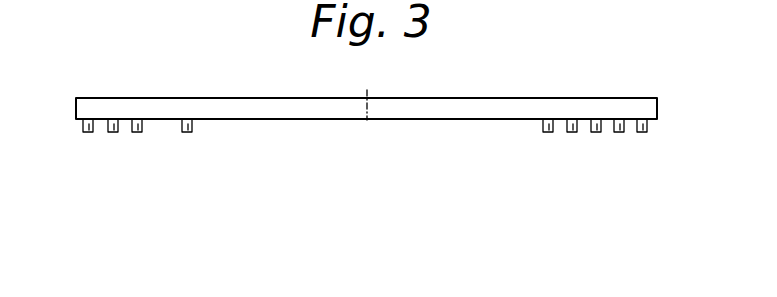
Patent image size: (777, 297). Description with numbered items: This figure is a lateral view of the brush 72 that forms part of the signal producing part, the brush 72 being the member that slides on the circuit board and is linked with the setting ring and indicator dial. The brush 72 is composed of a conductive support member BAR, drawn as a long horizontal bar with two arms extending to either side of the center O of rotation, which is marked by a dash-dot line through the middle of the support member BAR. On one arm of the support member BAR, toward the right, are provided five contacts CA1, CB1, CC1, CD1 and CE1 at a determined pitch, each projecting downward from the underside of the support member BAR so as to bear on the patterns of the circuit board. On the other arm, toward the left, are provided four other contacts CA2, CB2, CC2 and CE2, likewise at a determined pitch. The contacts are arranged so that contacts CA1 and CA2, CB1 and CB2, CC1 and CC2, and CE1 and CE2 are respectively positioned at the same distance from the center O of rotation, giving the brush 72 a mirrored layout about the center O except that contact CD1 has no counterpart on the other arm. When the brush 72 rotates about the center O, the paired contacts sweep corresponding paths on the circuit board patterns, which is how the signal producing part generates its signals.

The conductive support member BAR is at (332, 119).
The center of rotation O is at (368, 121).
The brush 72 is at (432, 134).
The contact CA2 is at (84, 133).
The contact CB2 is at (112, 133).
The contact CC2 is at (135, 133).
The contact CE2 is at (185, 133).
The contact CE1 is at (545, 133).
The contact CD1 is at (570, 133).
The contact CC1 is at (596, 133).
The contact CB1 is at (617, 133).
The contact CA1 is at (640, 133).